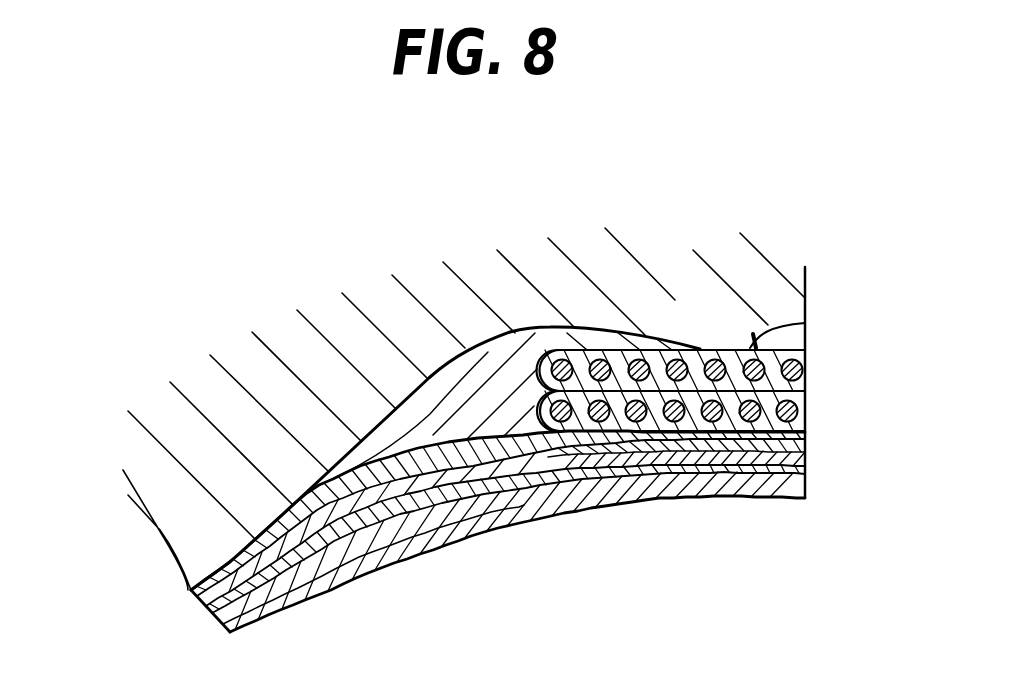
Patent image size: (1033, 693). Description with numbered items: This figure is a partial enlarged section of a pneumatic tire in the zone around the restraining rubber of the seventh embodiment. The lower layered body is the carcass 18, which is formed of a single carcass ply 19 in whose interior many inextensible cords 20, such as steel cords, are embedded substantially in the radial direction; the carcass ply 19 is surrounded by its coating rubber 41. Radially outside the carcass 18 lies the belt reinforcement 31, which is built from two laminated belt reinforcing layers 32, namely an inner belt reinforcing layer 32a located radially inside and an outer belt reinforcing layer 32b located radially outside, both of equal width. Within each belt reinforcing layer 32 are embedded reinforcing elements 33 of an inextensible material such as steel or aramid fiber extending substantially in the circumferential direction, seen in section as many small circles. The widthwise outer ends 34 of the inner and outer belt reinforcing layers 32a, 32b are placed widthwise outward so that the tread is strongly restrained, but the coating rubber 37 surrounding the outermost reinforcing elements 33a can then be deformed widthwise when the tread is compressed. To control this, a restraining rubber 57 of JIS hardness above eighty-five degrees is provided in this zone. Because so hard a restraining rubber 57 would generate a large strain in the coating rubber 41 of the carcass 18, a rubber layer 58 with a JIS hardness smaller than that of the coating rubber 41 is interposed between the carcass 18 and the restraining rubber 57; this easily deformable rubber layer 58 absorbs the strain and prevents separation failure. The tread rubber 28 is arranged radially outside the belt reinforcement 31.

The carcass 18 is at (288, 594).
The carcass ply 19 is at (355, 545).
The inextensible cords 20 is at (407, 500).
The tread rubber 28 is at (681, 266).
The belt reinforcement 31 is at (808, 320).
The belt reinforcing layer 32 is at (706, 378).
The inner belt reinforcing layer 32a is at (807, 425).
The outer belt reinforcing layer 32b is at (717, 352).
The reinforcing elements 33 is at (706, 436).
The outermost reinforcing elements 33a is at (557, 433).
The widthwise outer end 34 is at (535, 358).
The coating rubber 37 is at (533, 418).
The coating rubber 41 is at (188, 590).
The restraining rubber 57 is at (463, 377).
The rubber layer 58 is at (336, 462).